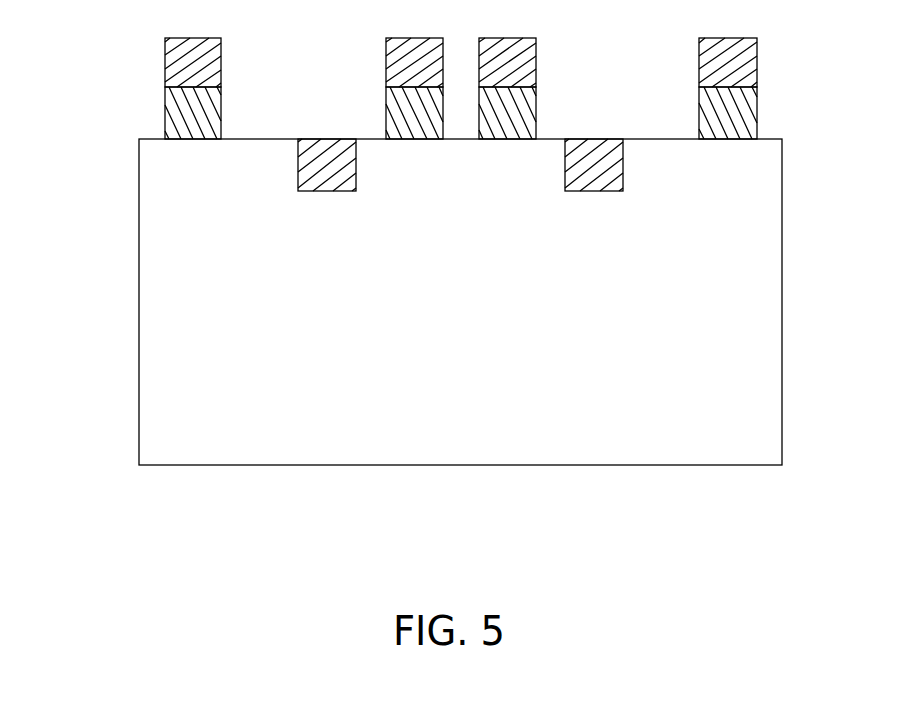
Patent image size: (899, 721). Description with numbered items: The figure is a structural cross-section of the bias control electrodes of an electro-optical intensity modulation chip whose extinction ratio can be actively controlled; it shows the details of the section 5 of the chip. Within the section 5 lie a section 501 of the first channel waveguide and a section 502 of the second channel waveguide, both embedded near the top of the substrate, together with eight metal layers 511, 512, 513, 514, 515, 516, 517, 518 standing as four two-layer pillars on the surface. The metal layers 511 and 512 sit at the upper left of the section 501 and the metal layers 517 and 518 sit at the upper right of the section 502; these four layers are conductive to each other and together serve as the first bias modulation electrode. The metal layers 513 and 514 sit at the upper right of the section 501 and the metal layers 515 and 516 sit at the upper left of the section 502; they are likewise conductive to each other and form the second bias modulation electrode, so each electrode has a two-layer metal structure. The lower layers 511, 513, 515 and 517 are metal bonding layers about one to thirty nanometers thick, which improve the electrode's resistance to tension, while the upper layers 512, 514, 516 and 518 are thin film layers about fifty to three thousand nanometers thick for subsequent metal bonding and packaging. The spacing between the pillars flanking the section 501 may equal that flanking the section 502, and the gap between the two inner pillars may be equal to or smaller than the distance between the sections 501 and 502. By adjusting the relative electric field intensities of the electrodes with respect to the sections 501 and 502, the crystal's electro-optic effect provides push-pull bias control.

The section 5 is at (736, 313).
The section of the first channel waveguide 501 is at (312, 165).
The section of the second channel waveguide 502 is at (605, 165).
The metal layer 511 is at (174, 112).
The metal layer 512 is at (174, 58).
The metal layer 513 is at (395, 112).
The metal layer 514 is at (395, 58).
The metal layer 515 is at (525, 115).
The metal layer 516 is at (527, 60).
The metal layer 517 is at (748, 113).
The metal layer 518 is at (746, 61).